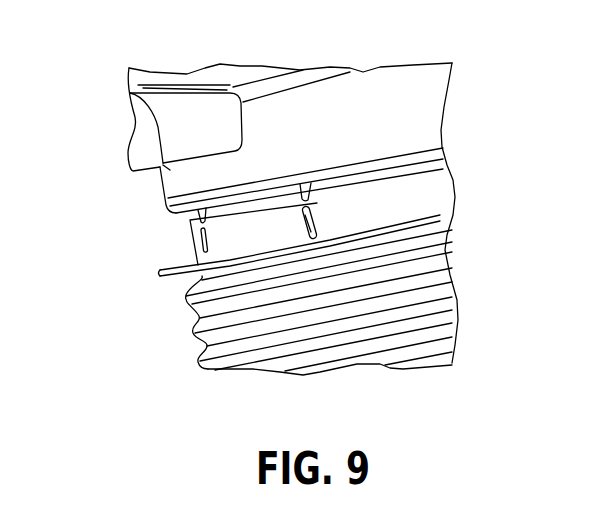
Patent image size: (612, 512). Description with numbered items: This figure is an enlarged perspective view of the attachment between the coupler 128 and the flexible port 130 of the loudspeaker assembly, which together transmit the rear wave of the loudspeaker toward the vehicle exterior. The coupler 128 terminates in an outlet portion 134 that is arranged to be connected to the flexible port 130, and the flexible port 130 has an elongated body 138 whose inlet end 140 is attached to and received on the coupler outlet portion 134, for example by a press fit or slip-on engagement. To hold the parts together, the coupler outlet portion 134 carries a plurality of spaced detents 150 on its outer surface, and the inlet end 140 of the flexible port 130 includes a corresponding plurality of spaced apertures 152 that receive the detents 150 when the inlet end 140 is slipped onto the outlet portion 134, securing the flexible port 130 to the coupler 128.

The coupler 128 is at (445, 110).
The flexible port 130 is at (312, 306).
The outlet portion 134 is at (170, 211).
The elongated body 138 is at (192, 335).
The inlet end 140 is at (427, 196).
The detents 150 is at (313, 214).
The apertures 152 is at (318, 222).